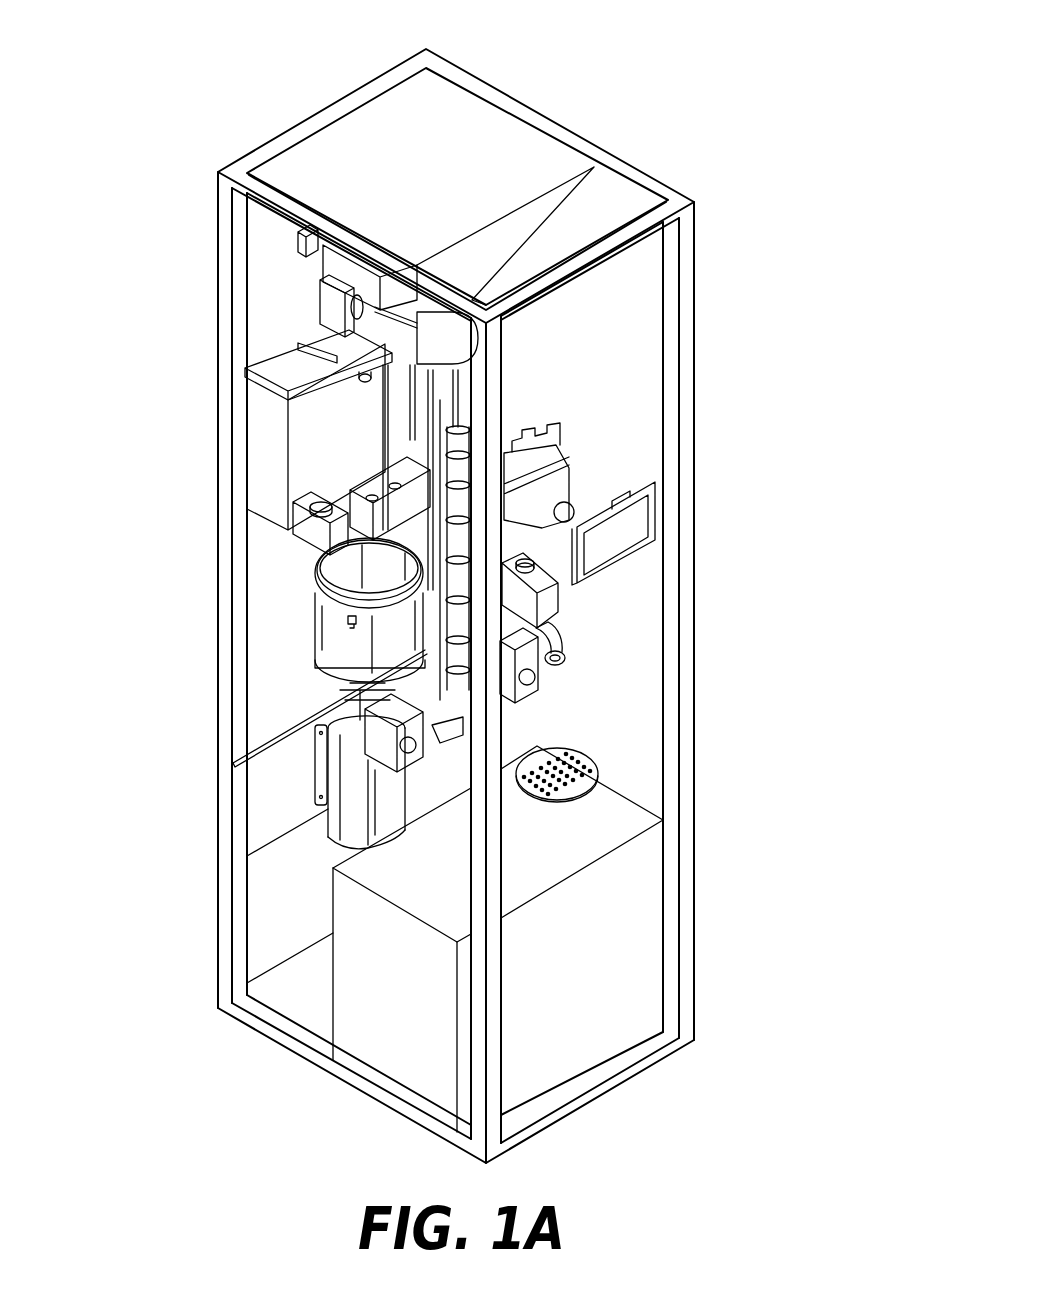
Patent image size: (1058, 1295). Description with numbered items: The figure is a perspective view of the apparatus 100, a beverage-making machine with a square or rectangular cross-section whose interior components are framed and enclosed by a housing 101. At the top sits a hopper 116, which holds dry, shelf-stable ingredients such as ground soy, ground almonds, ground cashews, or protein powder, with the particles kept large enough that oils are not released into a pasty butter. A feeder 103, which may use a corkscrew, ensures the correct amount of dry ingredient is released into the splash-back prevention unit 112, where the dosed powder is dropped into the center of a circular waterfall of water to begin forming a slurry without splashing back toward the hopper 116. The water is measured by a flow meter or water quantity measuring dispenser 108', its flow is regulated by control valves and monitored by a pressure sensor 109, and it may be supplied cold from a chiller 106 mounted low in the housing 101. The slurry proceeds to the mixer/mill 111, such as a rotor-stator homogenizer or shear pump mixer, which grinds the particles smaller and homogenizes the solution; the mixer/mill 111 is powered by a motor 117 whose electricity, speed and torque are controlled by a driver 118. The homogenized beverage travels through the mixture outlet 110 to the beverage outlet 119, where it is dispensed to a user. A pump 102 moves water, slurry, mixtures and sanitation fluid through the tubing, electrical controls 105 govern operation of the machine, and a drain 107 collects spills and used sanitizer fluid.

The apparatus 100 is at (200, 110).
The housing 101 is at (235, 228).
The pump 102 is at (247, 758).
The feeder 103 is at (320, 313).
The electrical controls 105 is at (258, 441).
The chiller 106 is at (353, 1036).
The drain 107 is at (580, 741).
The water quantity measuring dispenser 108' is at (607, 511).
The pressure sensor 109 is at (300, 573).
The mixture outlet 110 is at (552, 648).
The mixer/mill 111 is at (490, 603).
The splash-back prevention unit 112 is at (505, 483).
The hopper 116 is at (427, 133).
The motor 117 is at (350, 670).
The driver 118 is at (340, 702).
The beverage outlet 119 is at (555, 672).